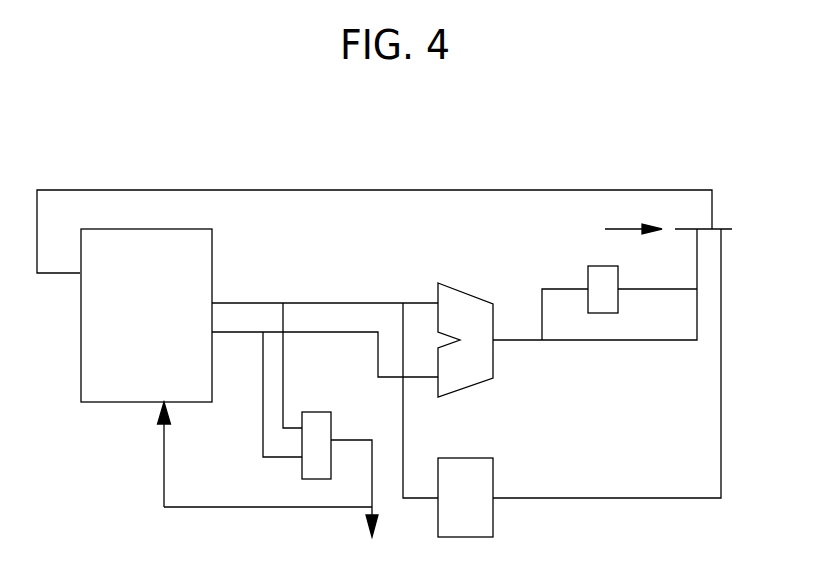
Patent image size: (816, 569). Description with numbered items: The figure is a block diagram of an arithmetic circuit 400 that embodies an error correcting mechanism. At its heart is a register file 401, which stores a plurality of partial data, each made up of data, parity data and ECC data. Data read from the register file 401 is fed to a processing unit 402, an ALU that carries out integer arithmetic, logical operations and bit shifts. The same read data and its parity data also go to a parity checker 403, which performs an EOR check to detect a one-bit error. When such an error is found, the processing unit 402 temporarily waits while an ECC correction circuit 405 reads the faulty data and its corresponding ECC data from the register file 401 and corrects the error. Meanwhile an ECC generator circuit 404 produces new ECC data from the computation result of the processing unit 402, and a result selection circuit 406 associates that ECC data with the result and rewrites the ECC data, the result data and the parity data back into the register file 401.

The arithmetic circuit 400 is at (655, 110).
The register file 401 is at (212, 257).
The processing unit 402 is at (495, 363).
The parity checker 403 is at (331, 423).
The ECC generator circuit 404 is at (618, 275).
The ECC correction circuit 405 is at (495, 480).
The result selection circuit 406 is at (732, 229).